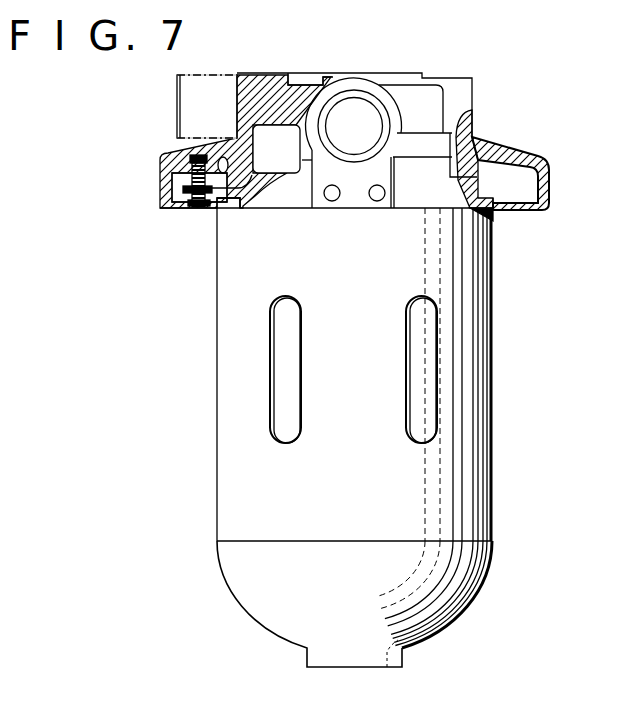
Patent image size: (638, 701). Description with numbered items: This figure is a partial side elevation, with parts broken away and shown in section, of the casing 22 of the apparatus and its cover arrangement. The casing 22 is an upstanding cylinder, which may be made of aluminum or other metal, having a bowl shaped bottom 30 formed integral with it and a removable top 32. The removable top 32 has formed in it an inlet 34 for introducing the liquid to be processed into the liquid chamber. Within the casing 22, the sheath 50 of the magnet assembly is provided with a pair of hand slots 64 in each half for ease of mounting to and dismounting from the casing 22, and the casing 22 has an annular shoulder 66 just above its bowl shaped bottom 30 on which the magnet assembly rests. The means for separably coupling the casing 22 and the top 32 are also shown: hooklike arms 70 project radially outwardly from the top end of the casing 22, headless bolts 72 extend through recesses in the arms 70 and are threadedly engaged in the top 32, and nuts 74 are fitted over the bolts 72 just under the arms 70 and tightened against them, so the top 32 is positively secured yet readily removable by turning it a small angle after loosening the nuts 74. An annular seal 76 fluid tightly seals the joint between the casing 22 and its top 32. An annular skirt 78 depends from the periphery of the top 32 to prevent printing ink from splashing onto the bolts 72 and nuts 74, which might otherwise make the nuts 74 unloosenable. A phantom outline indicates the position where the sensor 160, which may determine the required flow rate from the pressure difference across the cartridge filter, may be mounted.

The sensor 160 is at (222, 75).
The inlet 34 is at (368, 90).
The removable top 32 is at (472, 112).
The annular skirt 78 is at (541, 186).
The headless bolts 72 is at (193, 160).
The hooklike arms 70 is at (182, 188).
The nuts 74 is at (186, 199).
The casing 22 is at (229, 204).
The annular seal 76 is at (240, 166).
The hand slots 64 is at (287, 310).
The sheath 50 is at (478, 448).
The annular shoulder 66 is at (320, 541).
The bowl shaped bottom 30 is at (450, 592).